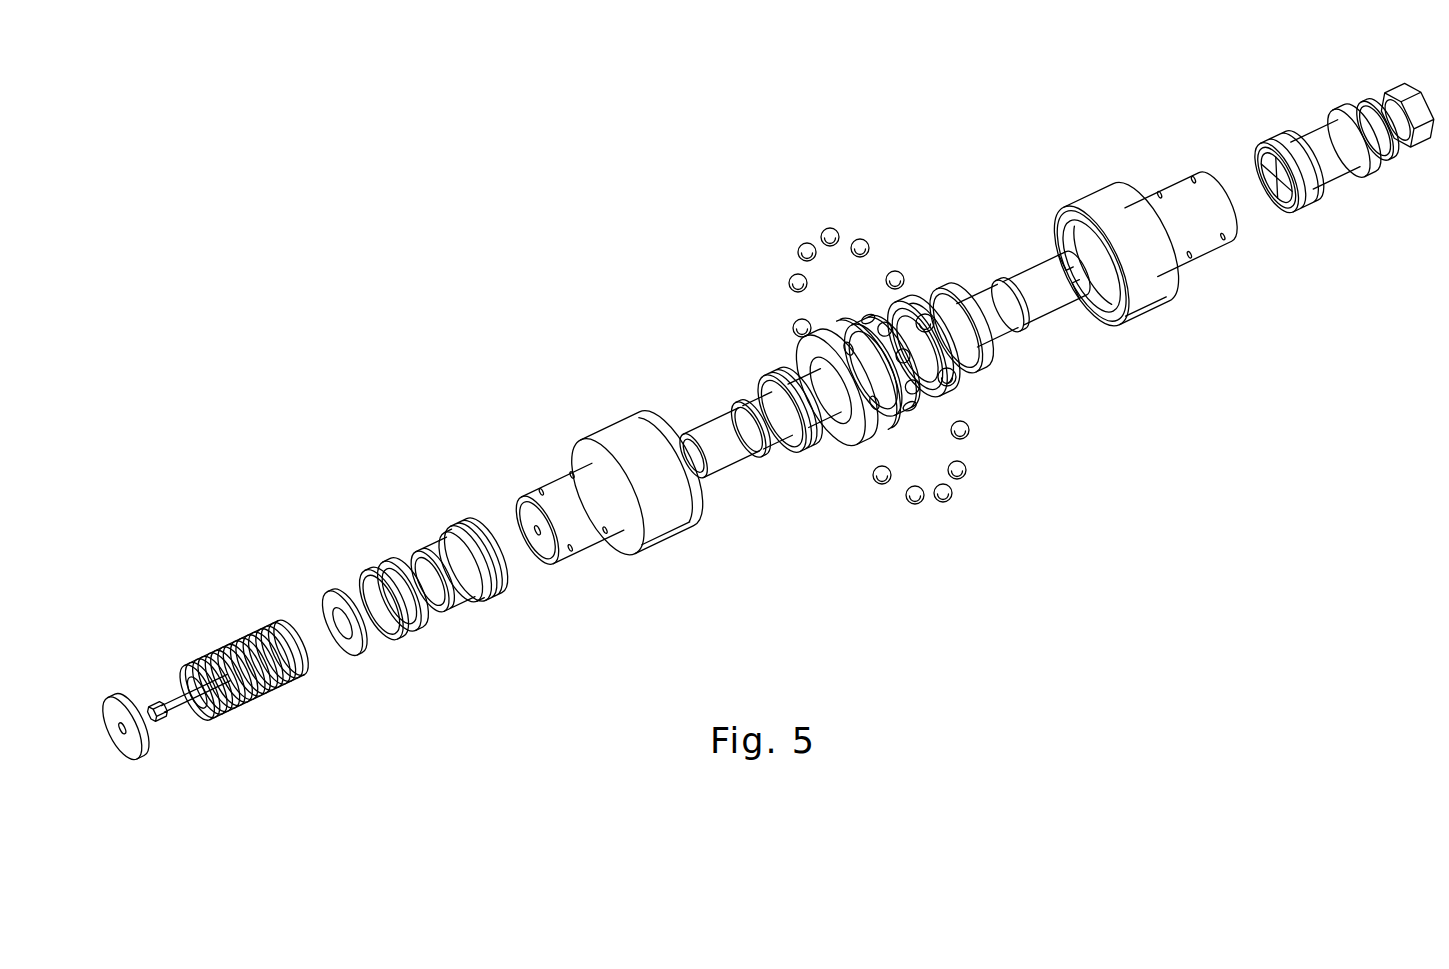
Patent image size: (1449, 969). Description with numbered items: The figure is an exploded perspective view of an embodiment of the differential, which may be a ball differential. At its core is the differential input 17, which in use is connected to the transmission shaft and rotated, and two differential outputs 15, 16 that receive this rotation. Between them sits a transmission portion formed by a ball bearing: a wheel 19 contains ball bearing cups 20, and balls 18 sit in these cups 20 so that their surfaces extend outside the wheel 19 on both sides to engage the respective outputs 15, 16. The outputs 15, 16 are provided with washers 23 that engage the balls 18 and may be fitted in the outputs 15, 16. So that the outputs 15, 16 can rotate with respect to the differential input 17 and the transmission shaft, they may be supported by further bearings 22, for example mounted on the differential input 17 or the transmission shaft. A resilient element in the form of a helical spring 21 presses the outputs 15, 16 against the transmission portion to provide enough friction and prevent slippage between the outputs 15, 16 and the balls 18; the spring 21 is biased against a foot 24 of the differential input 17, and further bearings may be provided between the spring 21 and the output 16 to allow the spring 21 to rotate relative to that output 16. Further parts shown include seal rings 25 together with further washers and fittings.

The differential output 15 is at (1157, 288).
The differential output 16 is at (618, 437).
The differential input 17 is at (968, 363).
The balls 18 is at (967, 475).
The wheel 19 is at (876, 333).
The ball bearing cups 20 is at (907, 413).
The helical spring 21 is at (253, 633).
The further bearings 22 is at (455, 530).
The washers 23 is at (923, 300).
The foot 24 is at (133, 748).
The seal rings 25 is at (833, 318).